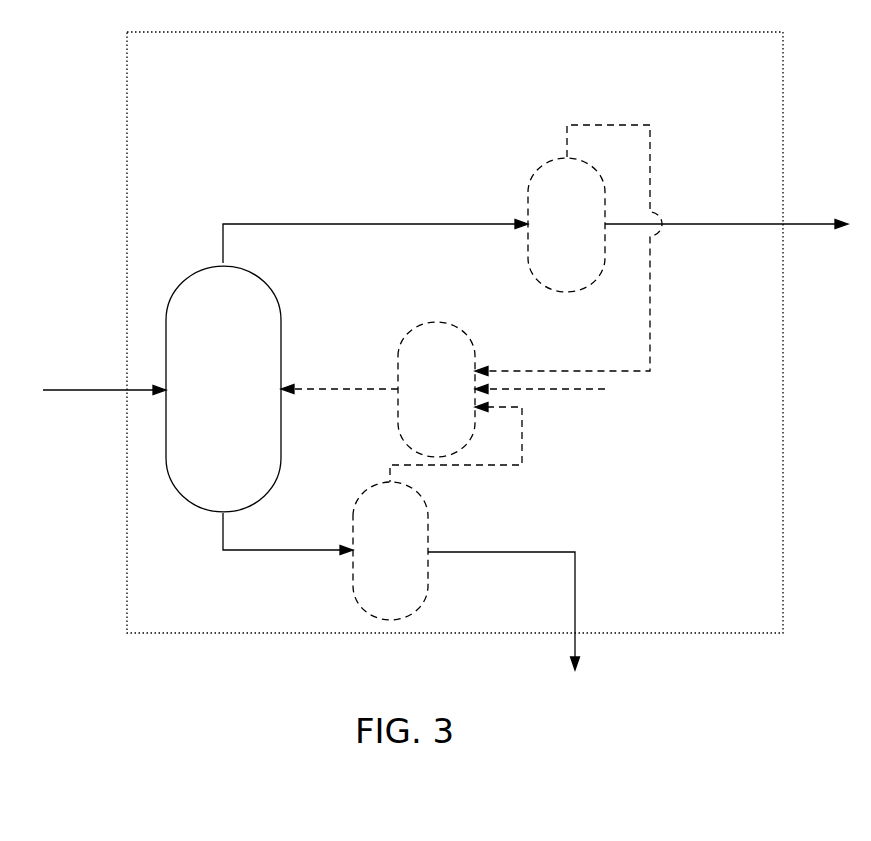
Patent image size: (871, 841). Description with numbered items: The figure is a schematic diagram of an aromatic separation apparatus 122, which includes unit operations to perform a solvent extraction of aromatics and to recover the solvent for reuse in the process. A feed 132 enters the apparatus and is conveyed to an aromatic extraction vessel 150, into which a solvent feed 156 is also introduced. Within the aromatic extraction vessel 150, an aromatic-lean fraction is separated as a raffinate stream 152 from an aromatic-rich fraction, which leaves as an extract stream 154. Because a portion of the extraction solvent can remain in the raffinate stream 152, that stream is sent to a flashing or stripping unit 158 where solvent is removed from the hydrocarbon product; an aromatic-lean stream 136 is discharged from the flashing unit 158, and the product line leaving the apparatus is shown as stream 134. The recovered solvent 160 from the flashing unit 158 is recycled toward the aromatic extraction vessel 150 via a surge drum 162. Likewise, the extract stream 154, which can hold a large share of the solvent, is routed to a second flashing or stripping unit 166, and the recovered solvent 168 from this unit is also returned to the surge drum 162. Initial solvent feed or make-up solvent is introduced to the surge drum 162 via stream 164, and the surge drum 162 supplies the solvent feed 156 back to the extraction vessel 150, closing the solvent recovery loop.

The aromatic separation apparatus 122 is at (127, 108).
The feed 132 is at (80, 390).
The product outlet stream 134 is at (811, 225).
The aromatic-lean stream 136 is at (578, 652).
The aromatic extraction vessel 150 is at (244, 399).
The raffinate stream 152 is at (372, 224).
The extract stream 154 is at (350, 550).
The solvent feed 156 is at (372, 389).
The flashing or stripping unit 158 is at (586, 237).
The solvent 160 is at (612, 125).
The surge drum 162 is at (456, 401).
The stream 164 is at (583, 389).
The flashing or stripping unit 166 is at (410, 564).
The solvent 168 is at (522, 462).